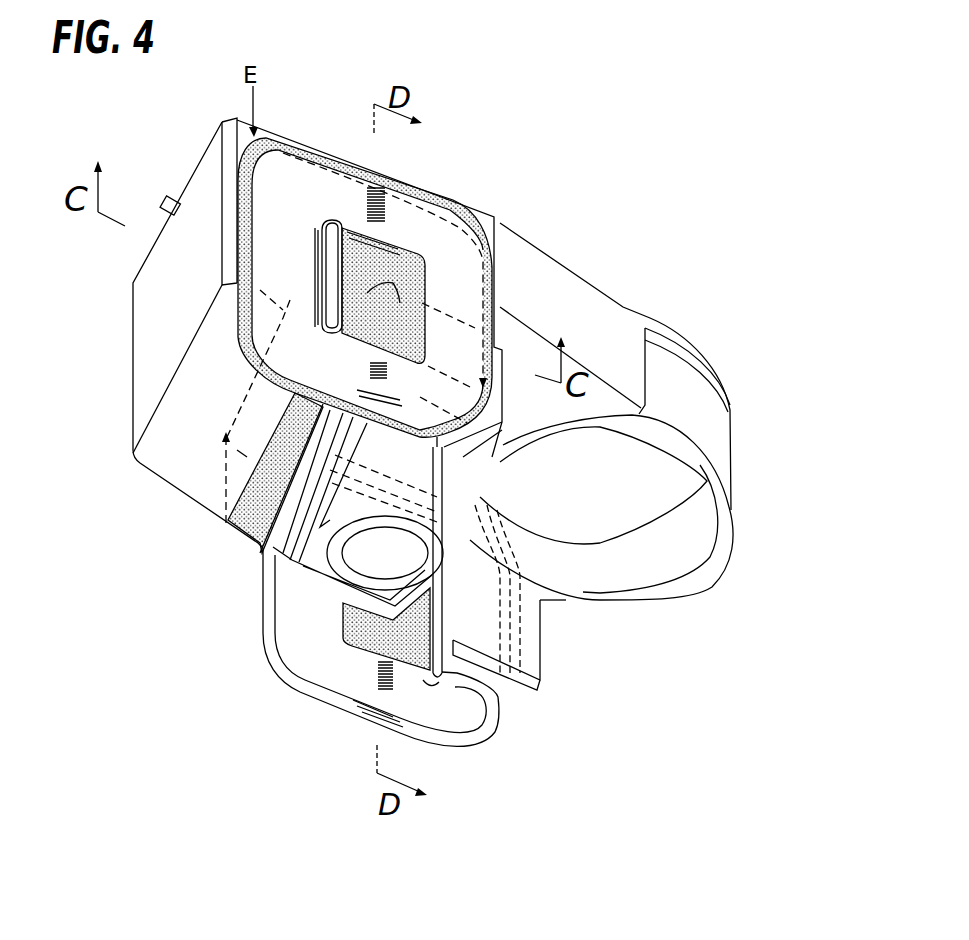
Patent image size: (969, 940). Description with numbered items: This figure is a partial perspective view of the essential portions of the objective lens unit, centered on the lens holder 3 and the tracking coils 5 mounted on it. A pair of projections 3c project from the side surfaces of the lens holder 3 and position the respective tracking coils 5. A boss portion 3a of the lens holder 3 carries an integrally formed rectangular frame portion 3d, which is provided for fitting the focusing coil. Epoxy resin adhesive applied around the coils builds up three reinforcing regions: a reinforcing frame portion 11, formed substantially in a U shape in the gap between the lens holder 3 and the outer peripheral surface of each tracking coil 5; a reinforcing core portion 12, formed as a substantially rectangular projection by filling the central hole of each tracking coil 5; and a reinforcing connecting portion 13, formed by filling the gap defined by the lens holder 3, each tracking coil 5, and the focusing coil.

The lens holder 3 is at (152, 367).
The boss portion 3a is at (348, 560).
The projections 3c is at (330, 217).
The rectangular frame portion 3d is at (352, 562).
The tracking coil 5 is at (453, 287).
The reinforcing frame portion 11 is at (437, 190).
The reinforcing core portion 12 is at (385, 270).
The reinforcing connecting portion 13 is at (237, 530).